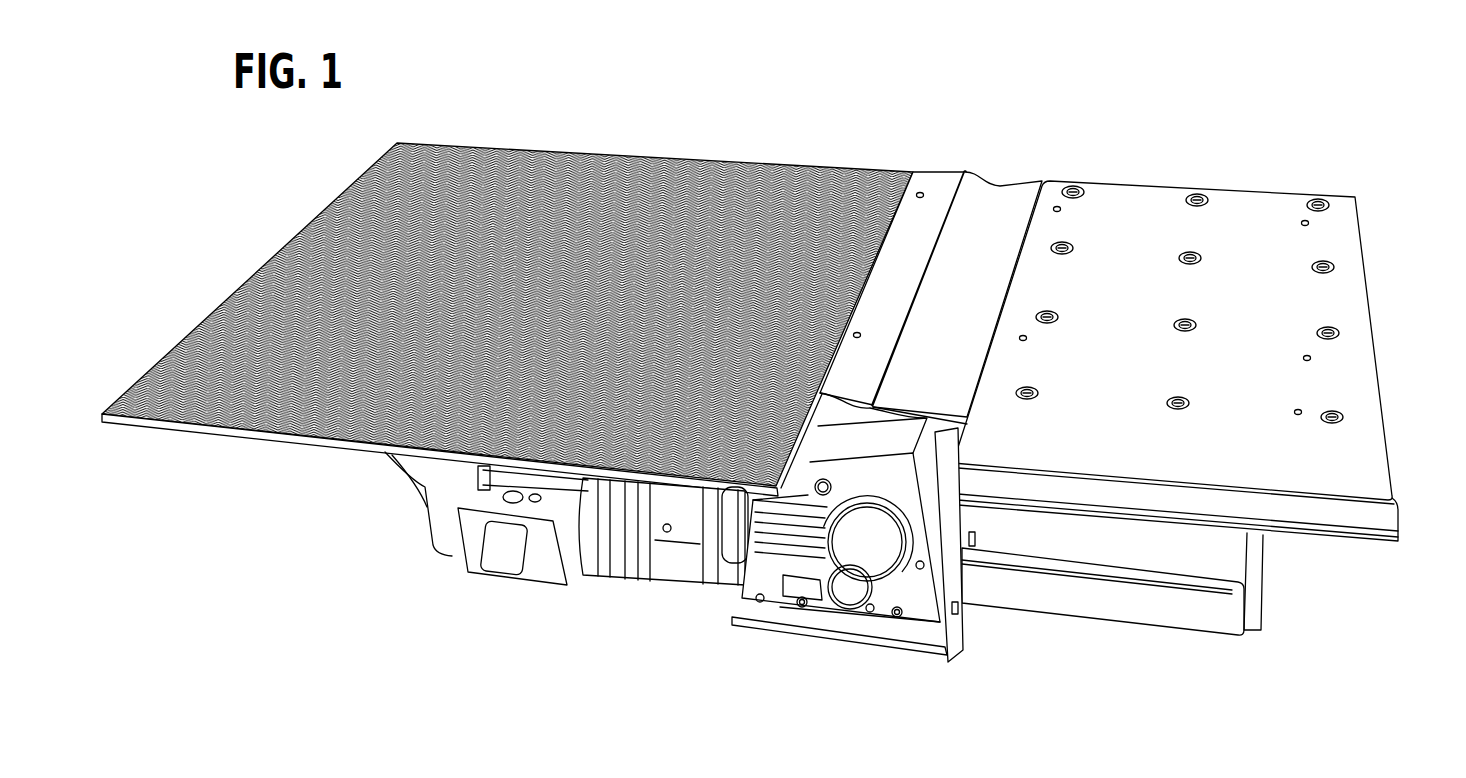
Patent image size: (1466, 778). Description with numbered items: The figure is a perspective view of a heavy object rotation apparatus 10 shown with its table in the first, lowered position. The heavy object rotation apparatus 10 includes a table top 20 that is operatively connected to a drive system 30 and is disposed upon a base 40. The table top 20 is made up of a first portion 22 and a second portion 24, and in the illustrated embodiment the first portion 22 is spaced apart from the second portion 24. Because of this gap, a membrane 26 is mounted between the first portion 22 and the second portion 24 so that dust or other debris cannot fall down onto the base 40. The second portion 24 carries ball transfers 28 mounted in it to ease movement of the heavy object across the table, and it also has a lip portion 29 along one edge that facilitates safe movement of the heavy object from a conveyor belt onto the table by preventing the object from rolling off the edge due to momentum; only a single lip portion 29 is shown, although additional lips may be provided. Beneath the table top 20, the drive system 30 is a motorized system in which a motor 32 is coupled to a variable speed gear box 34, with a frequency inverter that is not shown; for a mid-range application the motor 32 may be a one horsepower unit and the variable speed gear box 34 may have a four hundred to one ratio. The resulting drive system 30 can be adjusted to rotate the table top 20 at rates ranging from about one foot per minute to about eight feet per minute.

The heavy object rotation apparatus 10 is at (771, 376).
The table top 20 is at (771, 319).
The first portion 22 is at (608, 173).
The second portion 24 is at (1172, 314).
The membrane 26 is at (998, 195).
The ball transfers 28 is at (1320, 190).
The lip portion 29 is at (1347, 512).
The drive system 30 is at (652, 600).
The motor 32 is at (483, 563).
The variable speed gear box 34 is at (912, 575).
The base 40 is at (1217, 615).